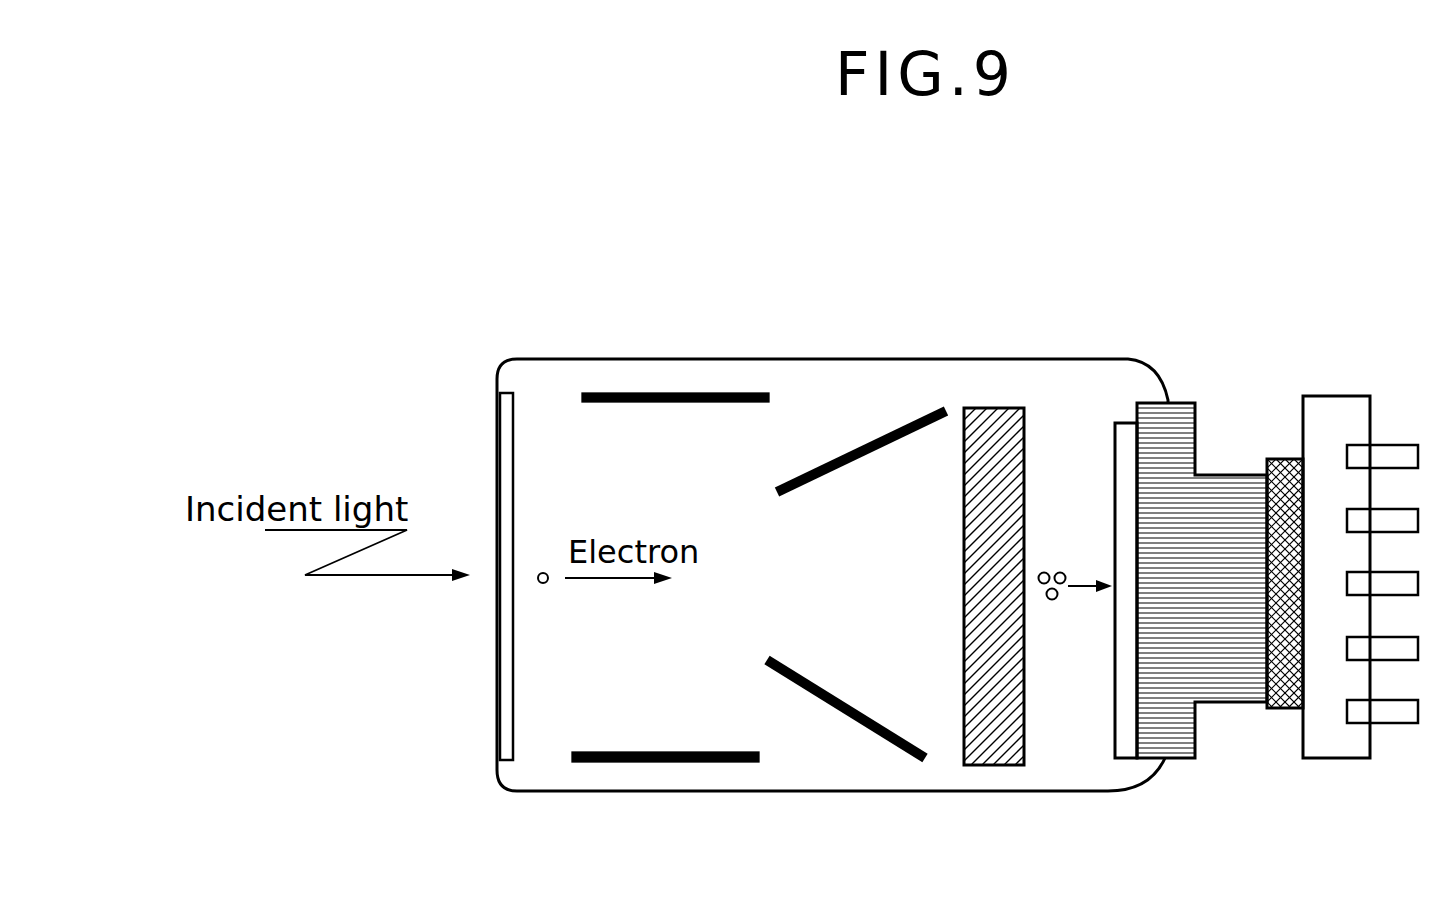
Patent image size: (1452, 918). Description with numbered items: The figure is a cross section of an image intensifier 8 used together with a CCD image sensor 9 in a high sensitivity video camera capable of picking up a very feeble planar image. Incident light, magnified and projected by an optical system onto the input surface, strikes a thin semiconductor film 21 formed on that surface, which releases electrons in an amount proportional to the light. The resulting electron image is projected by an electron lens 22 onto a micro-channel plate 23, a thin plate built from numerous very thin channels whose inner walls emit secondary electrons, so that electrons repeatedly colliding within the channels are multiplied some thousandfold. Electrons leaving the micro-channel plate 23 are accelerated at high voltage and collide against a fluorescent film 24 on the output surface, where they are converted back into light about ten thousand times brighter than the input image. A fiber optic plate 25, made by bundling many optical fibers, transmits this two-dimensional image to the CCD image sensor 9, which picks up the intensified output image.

The image intensifier 8 is at (1095, 286).
The CCD image sensor 9 is at (1282, 712).
The thin semiconductor film 21 is at (493, 716).
The electron lens 22 is at (661, 762).
The micro-channel plate 23 is at (992, 408).
The fluorescent film 24 is at (1112, 743).
The fiber optic plate 25 is at (1230, 473).